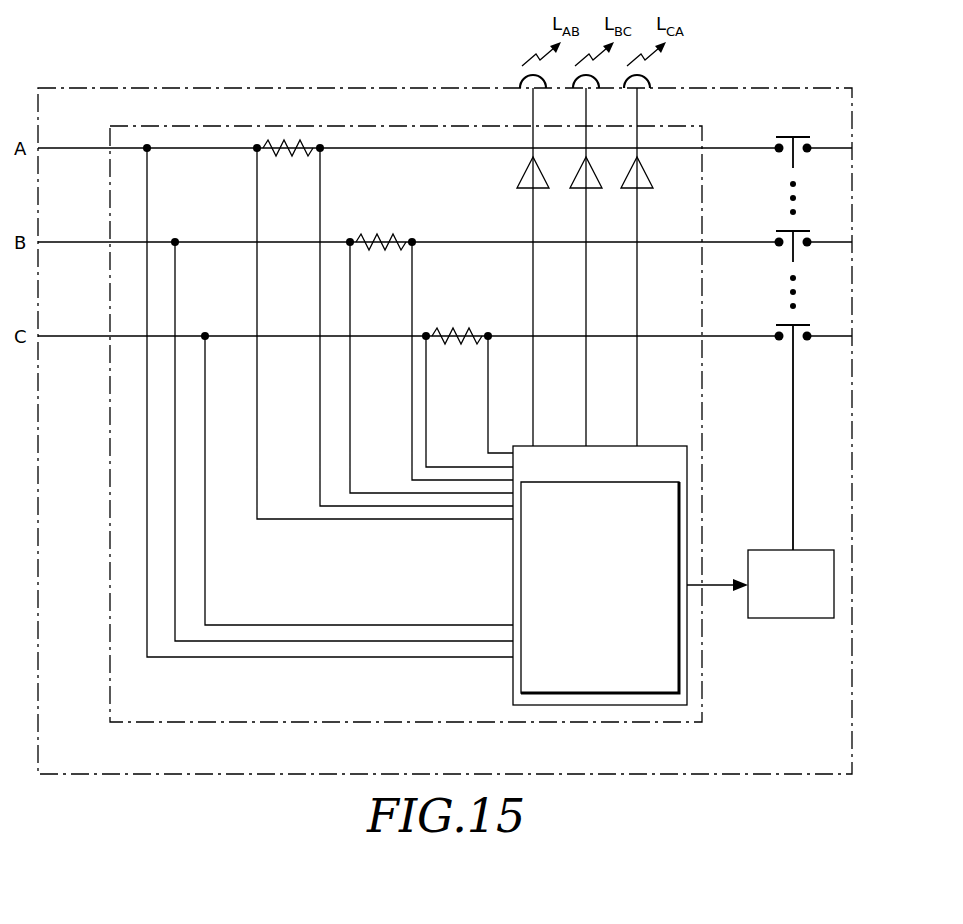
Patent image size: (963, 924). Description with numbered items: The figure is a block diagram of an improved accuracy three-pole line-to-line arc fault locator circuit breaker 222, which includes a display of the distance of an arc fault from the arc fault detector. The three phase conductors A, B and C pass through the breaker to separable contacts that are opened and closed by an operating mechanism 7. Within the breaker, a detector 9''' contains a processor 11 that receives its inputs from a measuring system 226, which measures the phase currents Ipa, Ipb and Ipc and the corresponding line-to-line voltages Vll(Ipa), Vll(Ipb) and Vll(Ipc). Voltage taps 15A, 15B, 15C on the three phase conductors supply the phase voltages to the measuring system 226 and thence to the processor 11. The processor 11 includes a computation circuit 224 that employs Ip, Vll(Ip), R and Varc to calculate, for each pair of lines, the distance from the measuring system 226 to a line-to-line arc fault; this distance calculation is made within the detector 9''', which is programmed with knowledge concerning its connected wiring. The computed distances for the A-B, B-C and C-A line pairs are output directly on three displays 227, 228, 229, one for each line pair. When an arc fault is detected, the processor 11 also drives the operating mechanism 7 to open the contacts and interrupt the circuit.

The three-pole line-to-line arc fault locator circuit breaker 222 is at (160, 775).
The detector 9''' is at (427, 424).
The measuring system 226 is at (362, 672).
The voltage tap 15A is at (147, 148).
The voltage tap 15B is at (175, 242).
The voltage tap 15C is at (205, 336).
The display 227 is at (521, 82).
The display 228 is at (575, 82).
The display 229 is at (650, 80).
The processor 11 is at (613, 446).
The computation circuit 224 is at (522, 566).
The operating mechanism 7 is at (813, 548).